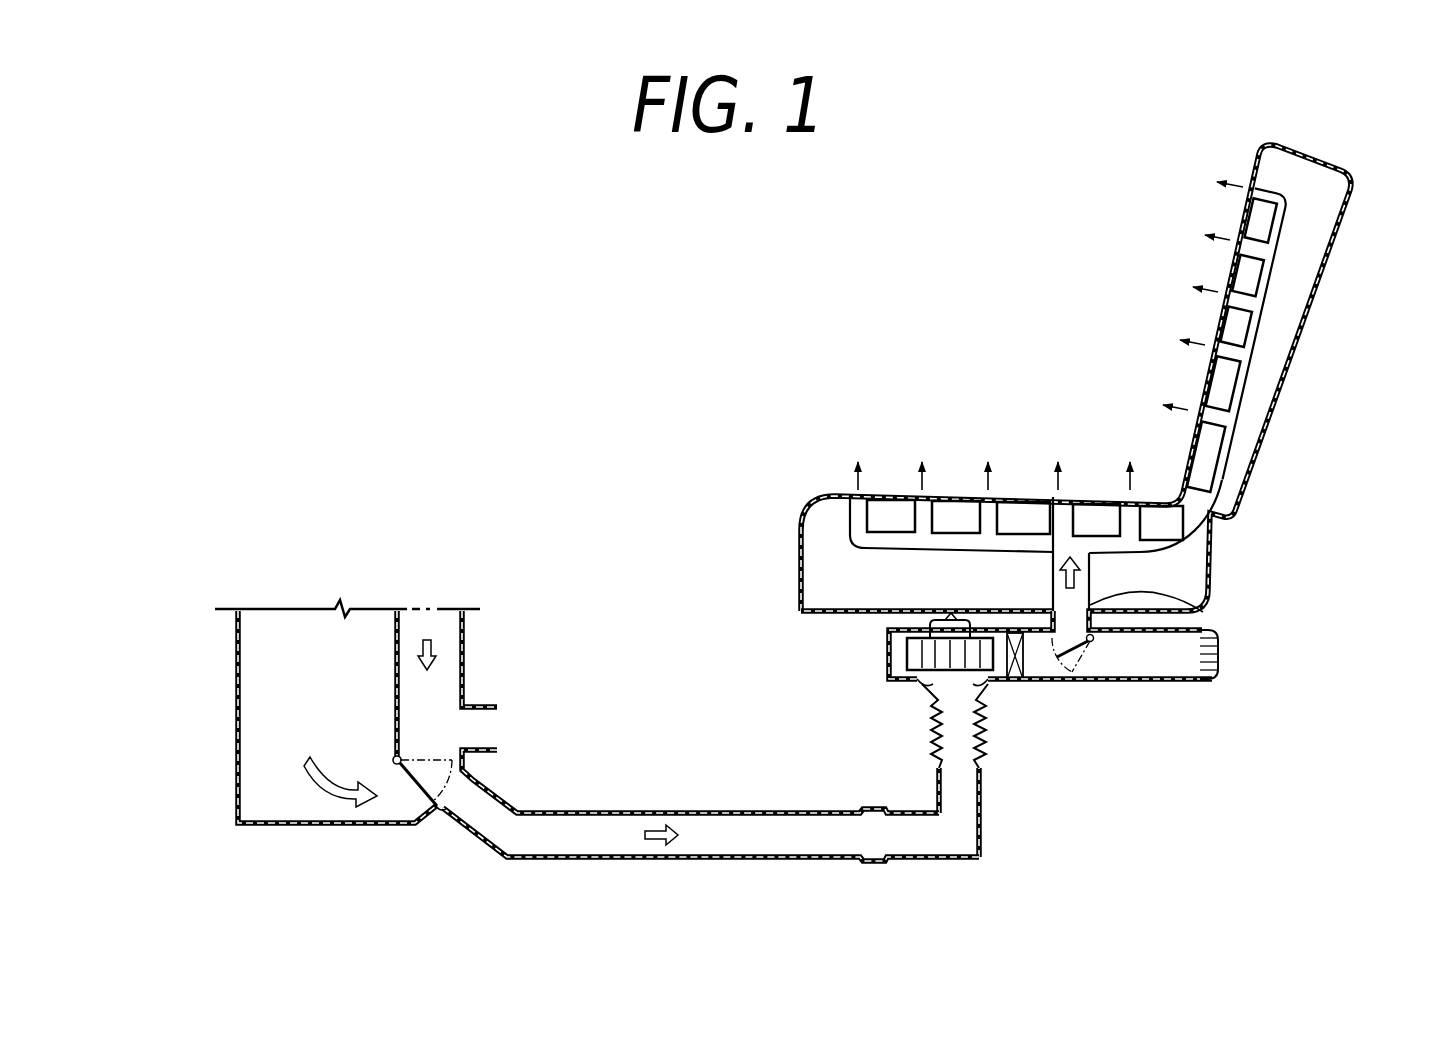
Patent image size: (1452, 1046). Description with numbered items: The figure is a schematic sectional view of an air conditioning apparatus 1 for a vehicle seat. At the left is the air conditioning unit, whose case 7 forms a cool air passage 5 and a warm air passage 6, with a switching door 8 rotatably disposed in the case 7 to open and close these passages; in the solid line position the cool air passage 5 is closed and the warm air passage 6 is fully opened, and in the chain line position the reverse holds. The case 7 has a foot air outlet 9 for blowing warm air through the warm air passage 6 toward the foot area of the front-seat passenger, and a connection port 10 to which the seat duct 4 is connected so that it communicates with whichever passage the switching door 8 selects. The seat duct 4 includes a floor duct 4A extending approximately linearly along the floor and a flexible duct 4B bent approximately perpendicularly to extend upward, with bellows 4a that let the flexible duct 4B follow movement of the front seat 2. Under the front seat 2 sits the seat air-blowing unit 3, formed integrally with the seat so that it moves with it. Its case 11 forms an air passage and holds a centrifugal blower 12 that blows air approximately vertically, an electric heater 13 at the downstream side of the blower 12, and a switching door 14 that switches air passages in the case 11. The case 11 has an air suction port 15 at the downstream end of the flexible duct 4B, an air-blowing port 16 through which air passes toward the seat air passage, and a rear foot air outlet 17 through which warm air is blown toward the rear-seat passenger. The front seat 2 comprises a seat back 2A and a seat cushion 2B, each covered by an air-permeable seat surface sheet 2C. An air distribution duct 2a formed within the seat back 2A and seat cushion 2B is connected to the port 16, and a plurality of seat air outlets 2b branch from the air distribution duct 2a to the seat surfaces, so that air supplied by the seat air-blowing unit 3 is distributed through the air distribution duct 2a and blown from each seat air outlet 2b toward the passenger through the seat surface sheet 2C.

The air conditioning apparatus 1 is at (590, 410).
The front seat 2 is at (1352, 160).
The seat back 2A is at (1337, 257).
The seat cushion 2B is at (828, 617).
The air distribution duct 2a is at (1255, 320).
The seat air outlets 2b is at (1245, 253).
The seat surface sheet 2C is at (1224, 318).
The seat air-blowing unit 3 is at (900, 700).
The seat duct 4 is at (786, 838).
The floor duct 4A is at (733, 860).
The flexible duct 4B is at (985, 828).
The bellows 4a is at (988, 750).
The cool air passage 5 is at (280, 627).
The warm air passage 6 is at (440, 627).
The case 7 is at (236, 693).
The switching door 8 is at (407, 782).
The foot air outlet 9 is at (483, 726).
The connection port 10 is at (453, 790).
The case 11 is at (1155, 682).
The blower 12 is at (907, 652).
The electric heater 13 is at (1012, 680).
The switching door 14 is at (1065, 680).
The air suction port 15 is at (952, 680).
The air-blowing port 16 is at (1203, 610).
The rear foot air outlet 17 is at (1215, 668).